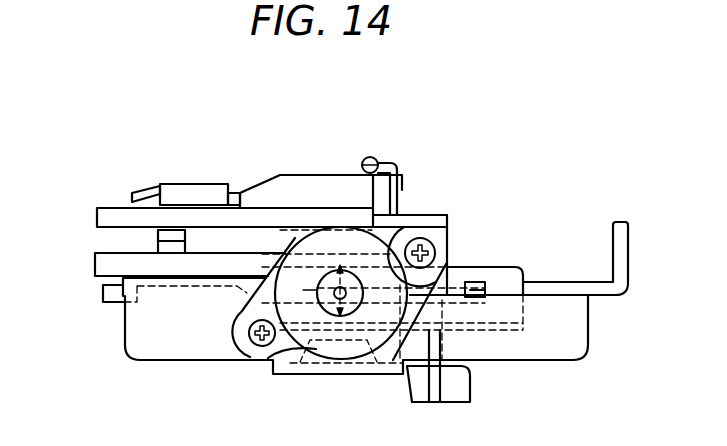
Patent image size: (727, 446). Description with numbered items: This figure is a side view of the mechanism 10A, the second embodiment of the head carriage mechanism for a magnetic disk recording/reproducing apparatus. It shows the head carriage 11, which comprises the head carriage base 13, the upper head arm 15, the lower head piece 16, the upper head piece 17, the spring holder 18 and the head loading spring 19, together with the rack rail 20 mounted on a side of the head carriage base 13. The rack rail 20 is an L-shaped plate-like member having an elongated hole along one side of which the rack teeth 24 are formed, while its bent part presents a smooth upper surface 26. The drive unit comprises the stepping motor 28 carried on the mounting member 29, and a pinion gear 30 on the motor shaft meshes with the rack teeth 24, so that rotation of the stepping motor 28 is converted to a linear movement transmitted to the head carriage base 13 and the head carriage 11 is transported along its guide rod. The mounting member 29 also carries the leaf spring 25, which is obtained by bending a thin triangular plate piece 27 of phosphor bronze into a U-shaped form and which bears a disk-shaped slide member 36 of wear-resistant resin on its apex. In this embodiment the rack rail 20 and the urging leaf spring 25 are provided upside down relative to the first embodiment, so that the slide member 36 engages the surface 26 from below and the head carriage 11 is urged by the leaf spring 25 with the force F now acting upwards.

The mechanism 10A is at (519, 97).
The head carriage 11 is at (253, 176).
The head carriage base 13 is at (116, 271).
The upper head arm 15 is at (112, 214).
The lower head piece 16 is at (163, 248).
The upper head piece 17 is at (157, 231).
The spring holder 18 is at (393, 164).
The head loading spring 19 is at (368, 157).
The rack rail 20 is at (494, 263).
The rack teeth 24 is at (400, 288).
The leaf spring 25 is at (243, 357).
The smooth upper surface 26 is at (502, 332).
The triangular plate piece 27 is at (267, 371).
The stepping motor 28 is at (340, 347).
The mounting member 29 is at (627, 300).
The pinion gear 30 is at (340, 268).
The slide member 36 is at (350, 343).